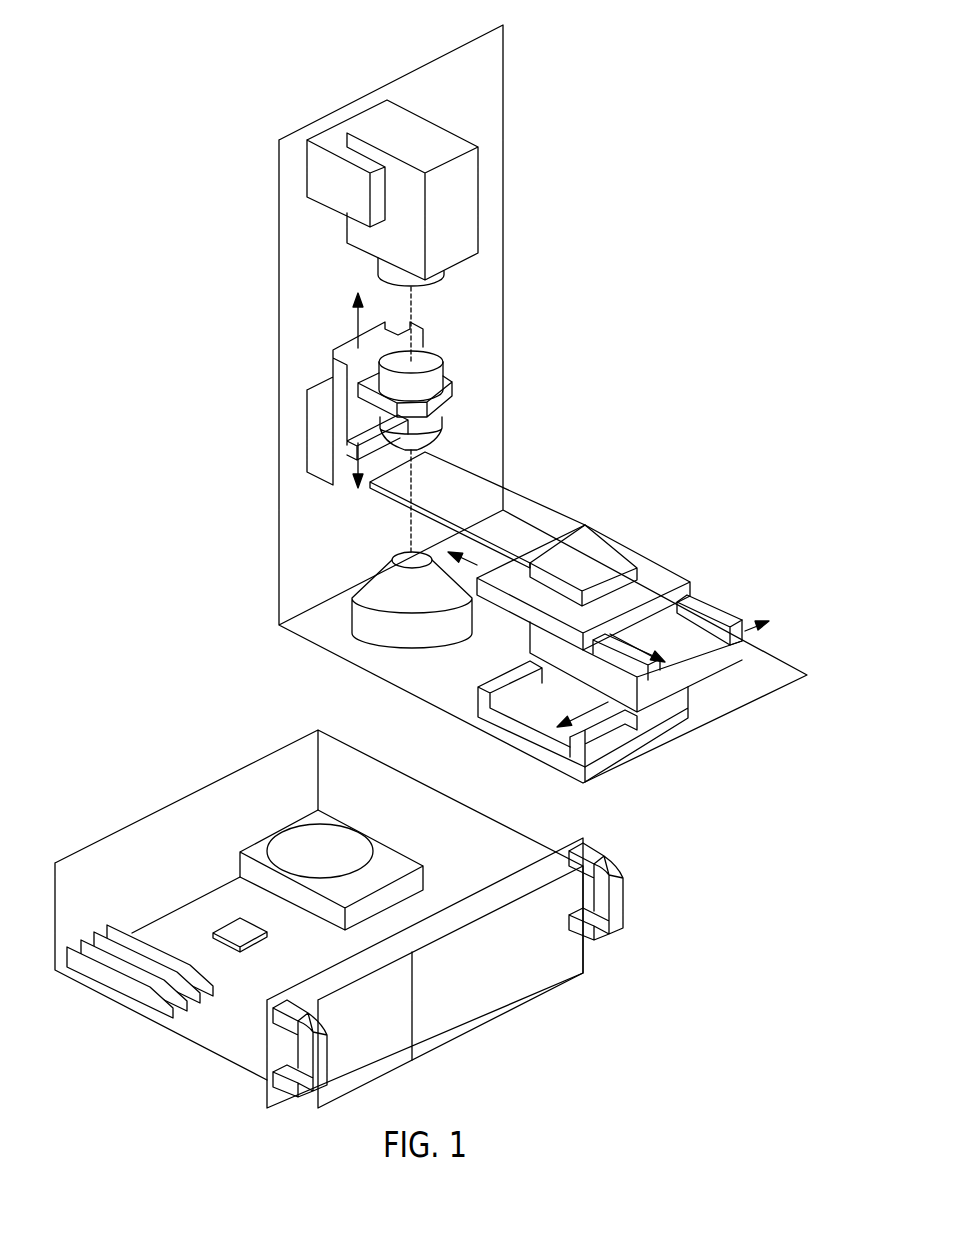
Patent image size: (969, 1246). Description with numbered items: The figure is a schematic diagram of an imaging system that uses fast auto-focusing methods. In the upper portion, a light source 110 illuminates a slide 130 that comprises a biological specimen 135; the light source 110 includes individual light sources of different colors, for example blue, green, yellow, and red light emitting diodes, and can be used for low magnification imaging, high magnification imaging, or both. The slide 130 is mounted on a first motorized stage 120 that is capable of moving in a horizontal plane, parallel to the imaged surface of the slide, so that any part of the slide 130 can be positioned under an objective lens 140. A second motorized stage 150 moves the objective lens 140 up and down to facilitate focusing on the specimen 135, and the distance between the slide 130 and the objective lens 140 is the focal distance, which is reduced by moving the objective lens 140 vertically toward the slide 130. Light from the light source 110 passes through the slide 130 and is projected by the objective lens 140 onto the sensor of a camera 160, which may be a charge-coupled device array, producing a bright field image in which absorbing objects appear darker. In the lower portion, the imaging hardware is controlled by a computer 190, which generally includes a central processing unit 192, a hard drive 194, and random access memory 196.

The light source 110 is at (370, 562).
The first motorized stage 120 is at (698, 580).
The slide 130 is at (537, 506).
The biological specimen 135 is at (433, 475).
The objective lens 140 is at (455, 359).
The second motorized stage 150 is at (298, 408).
The camera 160 is at (486, 196).
The computer 190 is at (626, 903).
The central processing unit 192 is at (278, 938).
The hard drive 194 is at (231, 848).
The random access memory 196 is at (224, 987).